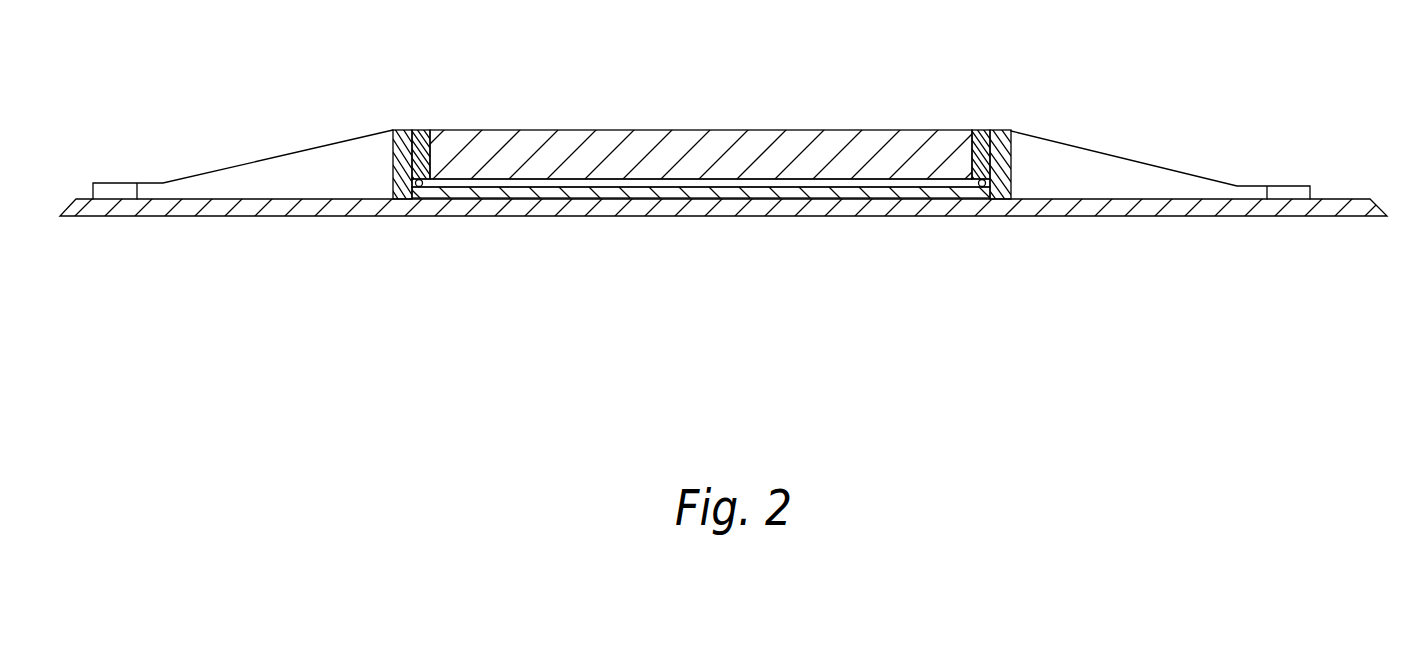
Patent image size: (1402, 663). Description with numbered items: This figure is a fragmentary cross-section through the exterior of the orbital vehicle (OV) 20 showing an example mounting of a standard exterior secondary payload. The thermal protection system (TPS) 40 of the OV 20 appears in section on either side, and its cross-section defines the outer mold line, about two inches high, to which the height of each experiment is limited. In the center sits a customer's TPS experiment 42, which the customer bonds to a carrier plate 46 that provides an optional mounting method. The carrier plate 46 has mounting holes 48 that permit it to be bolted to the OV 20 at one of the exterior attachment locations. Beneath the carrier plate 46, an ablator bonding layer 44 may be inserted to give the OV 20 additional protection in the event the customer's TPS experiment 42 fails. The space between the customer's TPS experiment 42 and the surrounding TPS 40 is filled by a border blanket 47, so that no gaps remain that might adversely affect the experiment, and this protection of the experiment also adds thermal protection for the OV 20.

The orbital vehicle 20 is at (185, 207).
The thermal protection system 40 is at (268, 172).
The customer thermal protection system experiment 42 is at (645, 148).
The ablator bonding layer 44 is at (545, 192).
The carrier plate 46 is at (673, 187).
The border blanket 47 is at (424, 150).
The mounting holes 48 is at (419, 188).